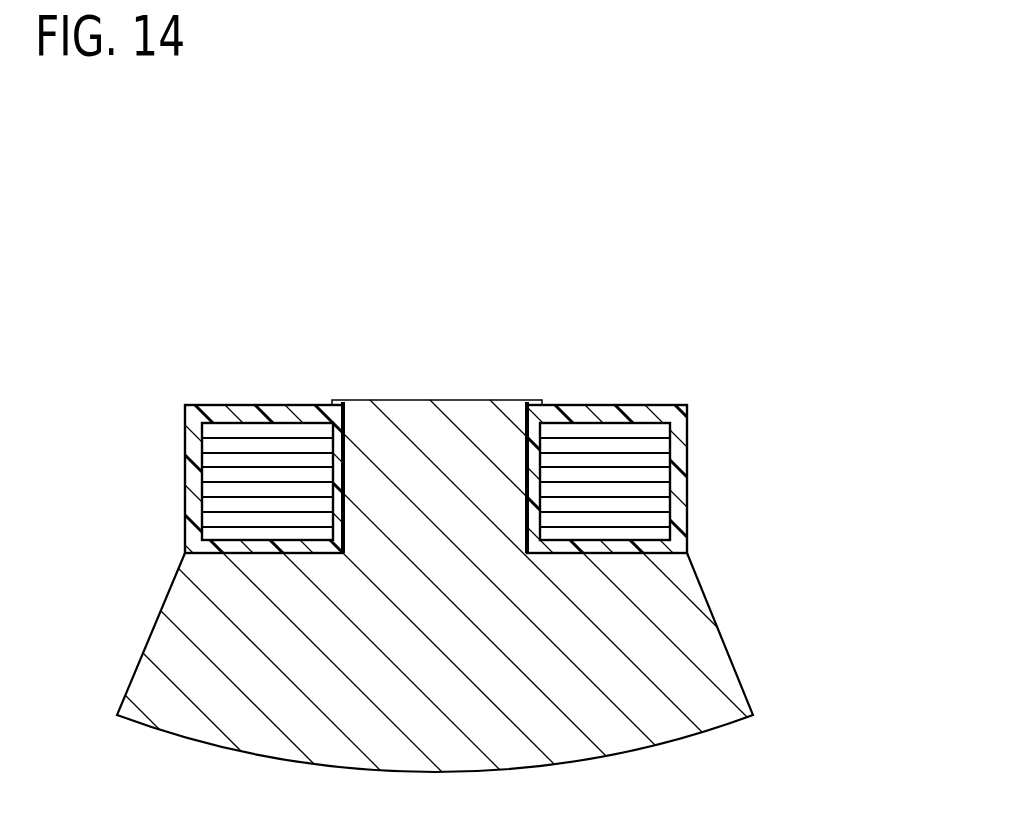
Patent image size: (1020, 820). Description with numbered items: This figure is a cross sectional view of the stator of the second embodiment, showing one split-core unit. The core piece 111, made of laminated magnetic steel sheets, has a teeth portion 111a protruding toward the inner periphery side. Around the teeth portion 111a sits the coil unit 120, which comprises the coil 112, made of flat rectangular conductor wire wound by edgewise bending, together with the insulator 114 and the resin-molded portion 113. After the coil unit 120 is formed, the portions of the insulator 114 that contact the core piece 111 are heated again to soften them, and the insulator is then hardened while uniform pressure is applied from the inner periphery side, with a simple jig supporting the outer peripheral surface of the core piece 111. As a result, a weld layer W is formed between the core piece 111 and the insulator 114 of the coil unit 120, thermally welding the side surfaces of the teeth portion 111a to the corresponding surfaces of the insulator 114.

The core piece 111 is at (703, 645).
The teeth portion 111a is at (413, 413).
The coil 112 is at (664, 507).
The resin-molded portion 113 is at (673, 417).
The insulator 114 is at (536, 402).
The coil unit 120 is at (508, 449).
The weld layer W is at (525, 441).